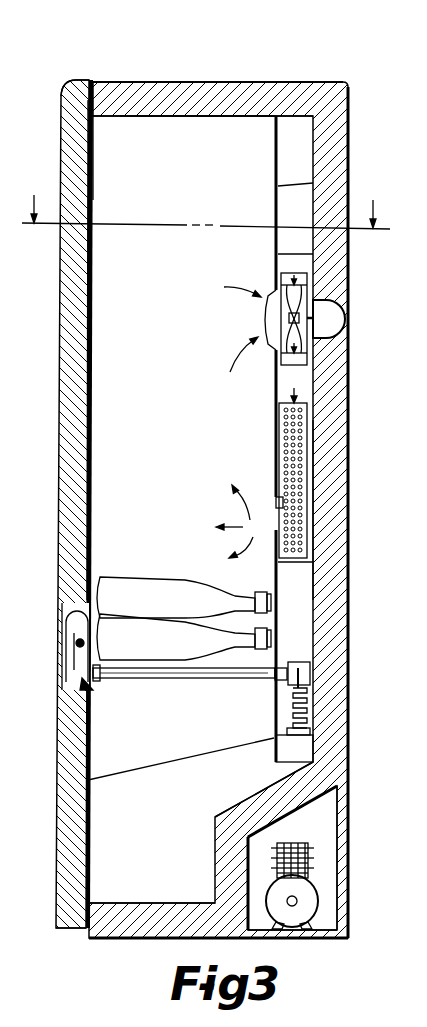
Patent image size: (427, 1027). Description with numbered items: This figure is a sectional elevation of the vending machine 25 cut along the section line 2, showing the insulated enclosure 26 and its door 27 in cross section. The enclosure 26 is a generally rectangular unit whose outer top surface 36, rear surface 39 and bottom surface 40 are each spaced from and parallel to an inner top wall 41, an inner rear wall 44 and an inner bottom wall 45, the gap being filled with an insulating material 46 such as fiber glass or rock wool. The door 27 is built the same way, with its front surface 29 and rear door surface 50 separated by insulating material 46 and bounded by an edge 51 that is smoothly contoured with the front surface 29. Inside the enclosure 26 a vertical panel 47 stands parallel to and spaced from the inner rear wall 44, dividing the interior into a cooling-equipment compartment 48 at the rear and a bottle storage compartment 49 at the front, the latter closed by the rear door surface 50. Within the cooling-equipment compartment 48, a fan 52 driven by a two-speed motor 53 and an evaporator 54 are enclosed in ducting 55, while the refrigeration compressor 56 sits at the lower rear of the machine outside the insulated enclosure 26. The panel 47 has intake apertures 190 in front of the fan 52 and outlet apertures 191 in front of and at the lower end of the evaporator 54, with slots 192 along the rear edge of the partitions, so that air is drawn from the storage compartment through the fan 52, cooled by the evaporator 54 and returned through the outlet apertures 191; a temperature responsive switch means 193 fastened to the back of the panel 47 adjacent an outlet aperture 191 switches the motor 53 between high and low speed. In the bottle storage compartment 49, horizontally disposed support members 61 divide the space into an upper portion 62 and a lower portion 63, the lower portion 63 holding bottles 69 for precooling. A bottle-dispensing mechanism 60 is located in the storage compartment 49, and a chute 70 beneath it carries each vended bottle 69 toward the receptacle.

The section line 2- 2 is at (206, 202).
The vending machine 25 is at (241, 76).
The enclosure 26 is at (355, 102).
The door 27 is at (52, 403).
The front surface 29 is at (70, 340).
The top surface 36 is at (170, 80).
The rear surface 39 is at (343, 762).
The bottom surface 40 is at (313, 943).
The inner top wall 41 is at (203, 117).
The inner rear wall 44 is at (313, 502).
The inner bottom wall 45 is at (165, 903).
The insulating material 46 is at (330, 172).
The vertical panel 47 is at (278, 186).
The cooling-equipment compartment 48 is at (300, 150).
The bottle storage compartment 49 is at (130, 465).
The rear door surface 50 is at (85, 276).
The edge 51 is at (71, 79).
The fan 52 is at (300, 358).
The motor 53 is at (347, 310).
The evaporator 54 is at (305, 437).
The ducting 55 is at (295, 253).
The refrigeration compressor 56 is at (292, 843).
The bottle-dispensing mechanism 60 is at (88, 686).
The support members 61 is at (165, 674).
The upper portion 62 is at (133, 173).
The lower portion 63 is at (107, 850).
The bottles 69 is at (123, 590).
The chute 70 is at (193, 760).
The intake apertures 190 is at (268, 354).
The outlet apertures 191 is at (272, 530).
The slots 192 is at (272, 300).
The temperature responsive switch means 193 is at (279, 498).